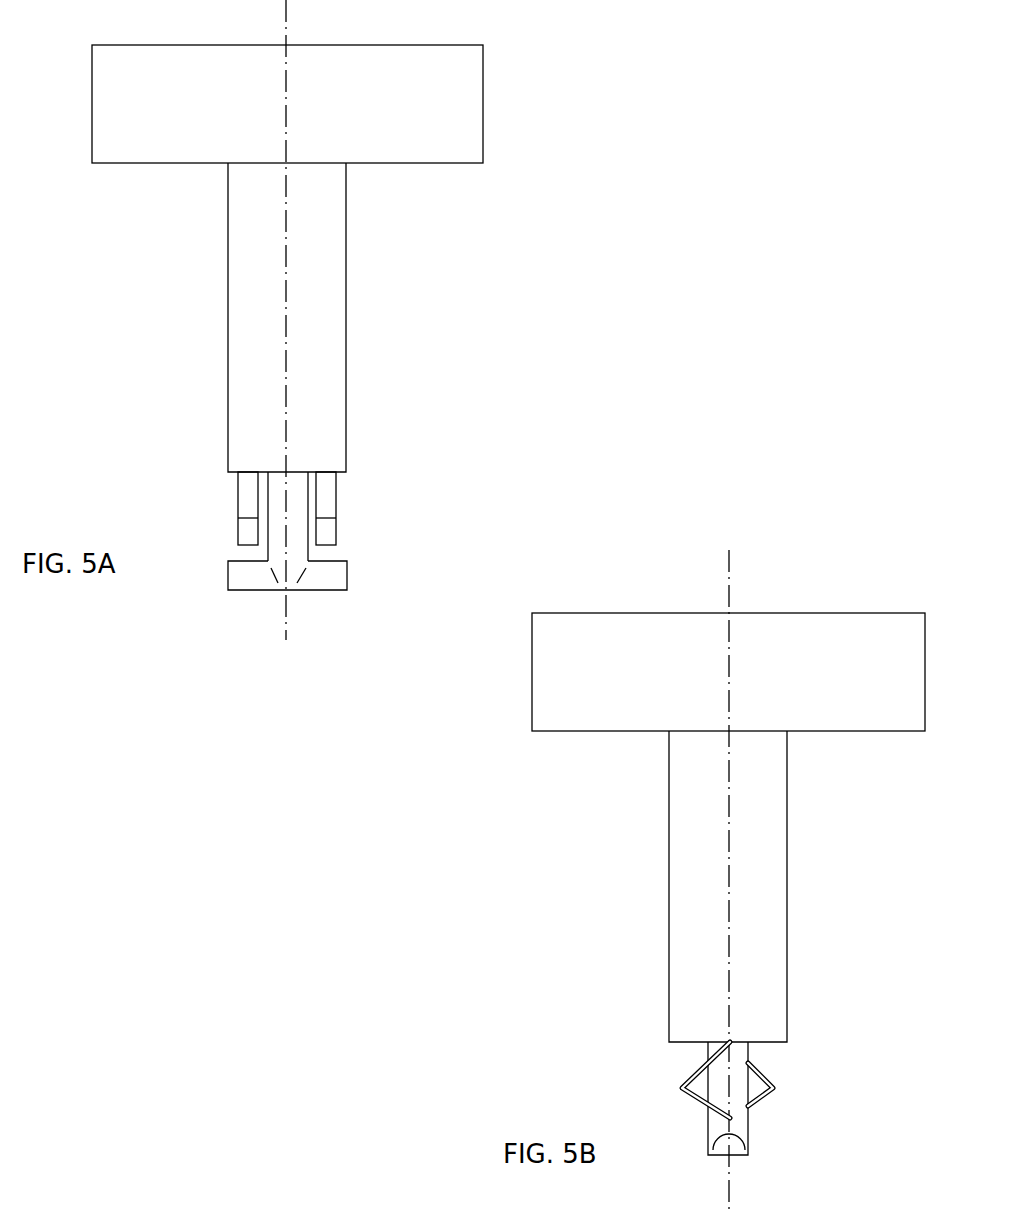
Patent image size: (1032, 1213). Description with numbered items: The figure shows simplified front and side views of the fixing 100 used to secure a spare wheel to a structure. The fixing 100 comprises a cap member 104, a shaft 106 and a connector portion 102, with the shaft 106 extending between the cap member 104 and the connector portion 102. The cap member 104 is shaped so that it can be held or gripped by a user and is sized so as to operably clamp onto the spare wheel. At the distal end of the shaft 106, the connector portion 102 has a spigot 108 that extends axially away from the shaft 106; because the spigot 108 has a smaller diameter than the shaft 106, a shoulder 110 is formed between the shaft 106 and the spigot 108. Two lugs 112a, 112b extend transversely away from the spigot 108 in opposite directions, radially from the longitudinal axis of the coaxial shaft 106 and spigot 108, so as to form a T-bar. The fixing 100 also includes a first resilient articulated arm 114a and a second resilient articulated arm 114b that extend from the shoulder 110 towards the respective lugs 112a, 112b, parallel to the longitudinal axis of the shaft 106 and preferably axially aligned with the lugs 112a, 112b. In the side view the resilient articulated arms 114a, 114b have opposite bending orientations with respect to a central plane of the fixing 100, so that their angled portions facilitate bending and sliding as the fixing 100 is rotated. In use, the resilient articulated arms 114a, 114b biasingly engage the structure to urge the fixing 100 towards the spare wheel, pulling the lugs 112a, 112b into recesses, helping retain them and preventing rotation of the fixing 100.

In FIG. 5A, the fixing 100 is at (590, 52).
In FIG. 5A, the connector portion 102 is at (342, 552).
In FIG. 5A, the cap member 104 is at (423, 145).
In FIG. 5A, the shaft 106 is at (333, 299).
In FIG. 5A, the spigot 108 is at (282, 508).
In FIG. 5A, the shoulder 110 is at (322, 468).
In FIG. 5A, the first lug 112a is at (238, 585).
In FIG. 5A, the second lug 112b is at (328, 578).
In FIG. 5B, the second lug 112b is at (735, 1147).
In FIG. 5B, the first resilient articulated arm 114a is at (753, 1083).
In FIG. 5B, the second resilient articulated arm 114b is at (695, 1073).